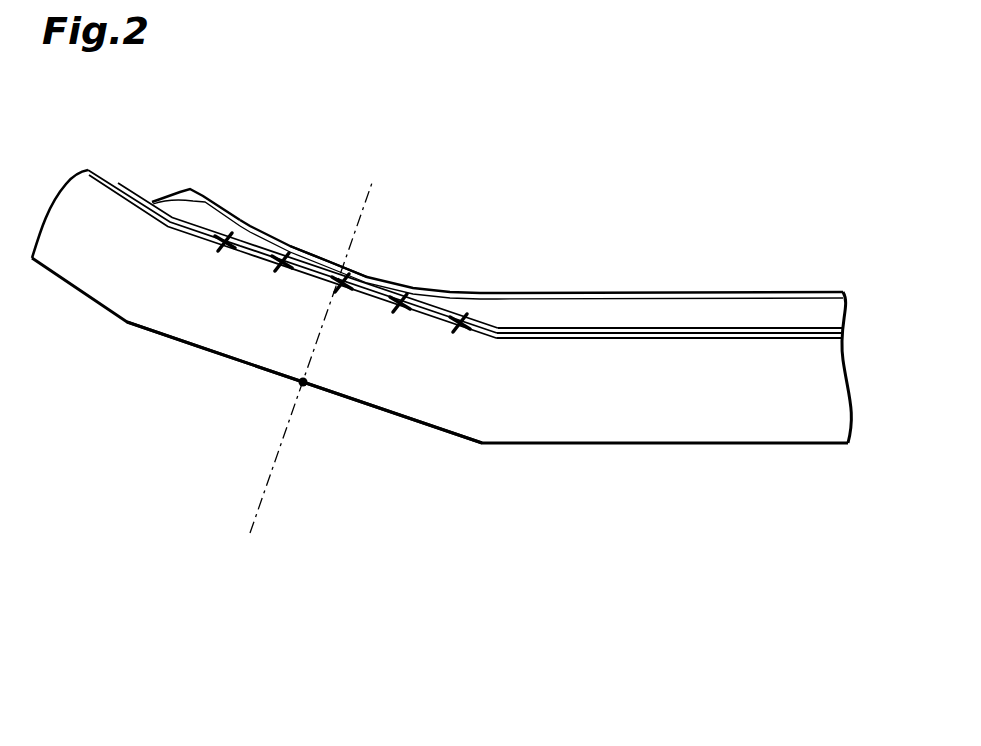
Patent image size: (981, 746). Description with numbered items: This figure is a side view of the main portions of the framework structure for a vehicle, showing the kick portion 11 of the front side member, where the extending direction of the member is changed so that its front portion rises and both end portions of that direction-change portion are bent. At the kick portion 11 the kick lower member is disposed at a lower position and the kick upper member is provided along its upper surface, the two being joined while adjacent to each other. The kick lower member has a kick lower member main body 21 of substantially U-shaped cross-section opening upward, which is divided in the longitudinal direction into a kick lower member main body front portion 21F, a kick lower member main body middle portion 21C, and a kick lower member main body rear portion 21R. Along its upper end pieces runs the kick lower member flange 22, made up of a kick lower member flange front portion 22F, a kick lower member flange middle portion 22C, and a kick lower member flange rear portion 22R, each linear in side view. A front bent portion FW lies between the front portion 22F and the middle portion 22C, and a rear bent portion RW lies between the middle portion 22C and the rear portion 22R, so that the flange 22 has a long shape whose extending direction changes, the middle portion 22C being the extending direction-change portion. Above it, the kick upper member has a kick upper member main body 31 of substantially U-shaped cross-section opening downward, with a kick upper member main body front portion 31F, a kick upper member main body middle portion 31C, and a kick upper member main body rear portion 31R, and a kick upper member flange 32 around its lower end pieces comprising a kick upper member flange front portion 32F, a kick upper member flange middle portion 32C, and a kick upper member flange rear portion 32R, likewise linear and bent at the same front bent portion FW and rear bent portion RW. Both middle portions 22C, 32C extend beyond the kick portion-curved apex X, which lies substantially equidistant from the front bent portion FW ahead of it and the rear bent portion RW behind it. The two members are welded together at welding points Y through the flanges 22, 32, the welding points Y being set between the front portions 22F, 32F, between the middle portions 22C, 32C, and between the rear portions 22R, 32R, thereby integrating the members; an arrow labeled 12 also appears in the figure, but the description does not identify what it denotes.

The kick portion 11 is at (249, 391).
The bend line of roof panel 12 is at (327, 233).
The kick lower member main body 21 is at (441, 359).
The kick lower member main body front portion 21F is at (85, 278).
The kick lower member main body middle portion 21C is at (425, 412).
The kick lower member main body rear portion 21R is at (712, 427).
The kick lower member flange 22 is at (455, 332).
The kick lower member flange front portion 22F is at (120, 193).
The kick lower member flange middle portion 22C is at (358, 289).
The kick lower member flange rear portion 22R is at (785, 339).
The kick upper member main body 31 is at (497, 201).
The kick upper member main body front portion 31F is at (187, 196).
The kick upper member main body middle portion 31C is at (367, 288).
The kick upper member main body rear portion 31R is at (722, 305).
The kick upper member flange 32 is at (480, 242).
The kick upper member flange front portion 32F is at (217, 199).
The kick upper member flange middle portion 32C is at (430, 302).
The kick upper member flange rear portion 32R is at (807, 327).
The front bent portion FW is at (167, 223).
The rear bent portion RW is at (497, 340).
The kick portion-curved apex X is at (303, 388).
The welding points Y is at (225, 249).